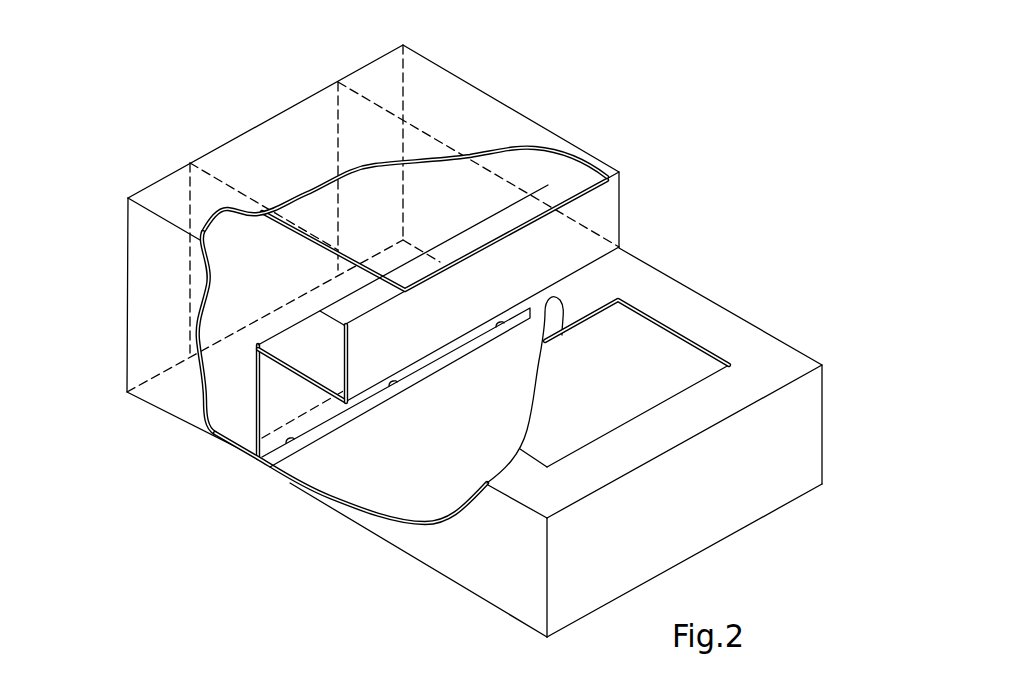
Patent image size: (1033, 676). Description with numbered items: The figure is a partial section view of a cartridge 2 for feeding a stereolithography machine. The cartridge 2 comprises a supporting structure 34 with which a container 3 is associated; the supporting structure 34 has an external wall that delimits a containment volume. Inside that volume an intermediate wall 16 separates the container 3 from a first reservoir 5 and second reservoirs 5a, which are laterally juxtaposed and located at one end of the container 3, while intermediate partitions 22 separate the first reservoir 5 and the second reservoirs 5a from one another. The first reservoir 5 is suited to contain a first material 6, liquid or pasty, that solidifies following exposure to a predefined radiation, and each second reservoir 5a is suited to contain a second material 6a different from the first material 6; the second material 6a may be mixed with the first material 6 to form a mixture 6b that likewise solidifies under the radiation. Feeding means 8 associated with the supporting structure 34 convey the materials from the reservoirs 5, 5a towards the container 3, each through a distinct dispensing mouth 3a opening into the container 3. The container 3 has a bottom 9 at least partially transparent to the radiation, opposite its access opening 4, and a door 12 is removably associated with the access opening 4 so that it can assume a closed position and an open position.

The cartridge 2 is at (775, 117).
The container 3 is at (590, 441).
The dispensing mouth 3a is at (497, 335).
The access opening 4 is at (730, 355).
The first reservoir 5 is at (275, 148).
The second reservoir 5a is at (441, 88).
The first material 6 is at (512, 216).
The second material 6a is at (248, 242).
The mixture 6b is at (350, 495).
The feeding means 8 is at (260, 455).
The bottom 9 is at (765, 515).
The door 12 is at (637, 343).
The intermediate wall 16 is at (250, 410).
The intermediate partitions 22 is at (350, 245).
The supporting structure 34 is at (826, 373).